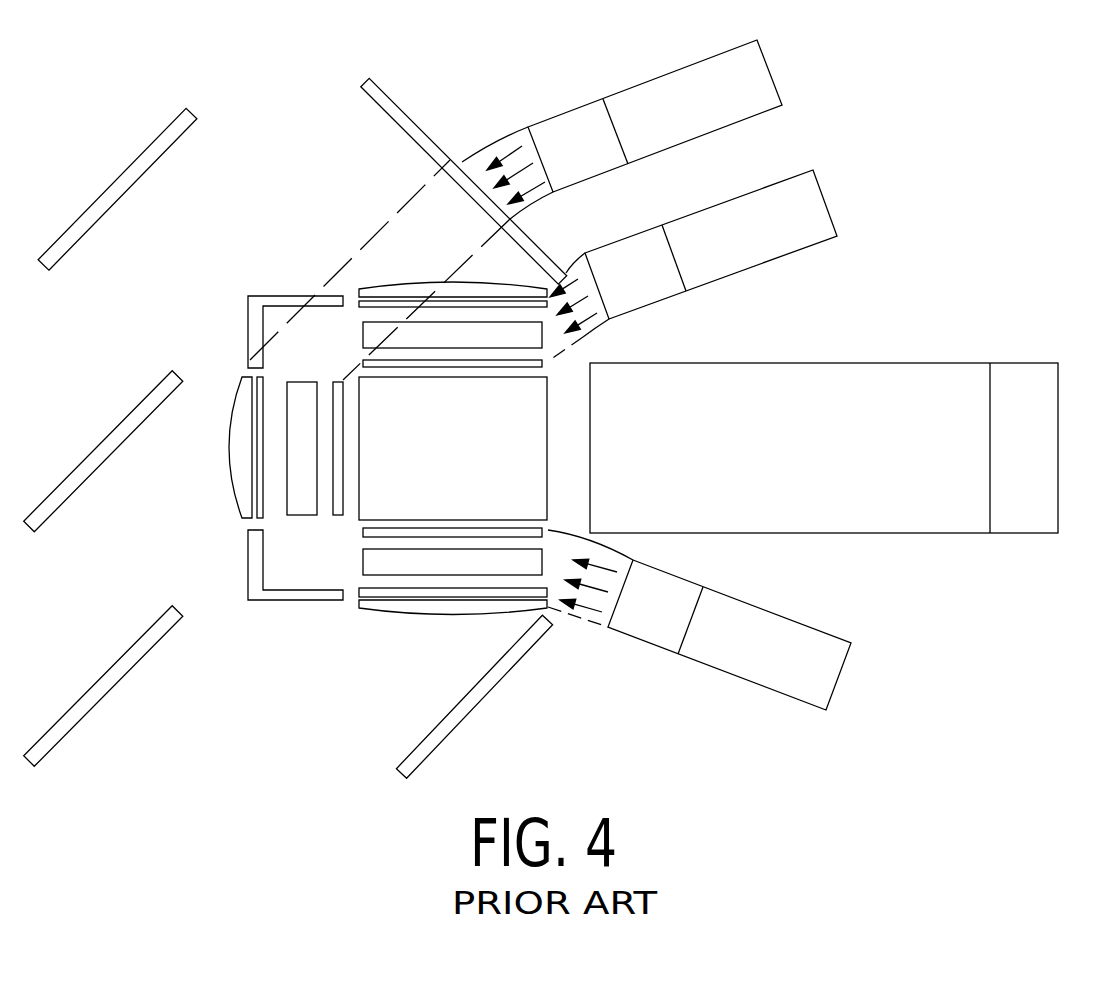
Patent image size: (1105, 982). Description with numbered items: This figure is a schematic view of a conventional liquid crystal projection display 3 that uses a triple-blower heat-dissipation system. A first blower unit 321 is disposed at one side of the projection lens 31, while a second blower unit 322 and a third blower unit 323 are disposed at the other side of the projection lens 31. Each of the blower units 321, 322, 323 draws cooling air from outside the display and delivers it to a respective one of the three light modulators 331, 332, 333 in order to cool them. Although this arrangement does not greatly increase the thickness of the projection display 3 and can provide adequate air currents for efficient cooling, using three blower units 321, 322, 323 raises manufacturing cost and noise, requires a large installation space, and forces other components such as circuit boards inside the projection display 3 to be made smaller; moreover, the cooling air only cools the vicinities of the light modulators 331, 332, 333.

The liquid crystal projection display 3 is at (852, 116).
The projection lens 31 is at (857, 393).
The first blower unit 321 is at (827, 650).
The second blower unit 322 is at (747, 70).
The third blower unit 323 is at (808, 222).
The light modulator 331 is at (350, 563).
The light modulator 332 is at (290, 530).
The light modulator 333 is at (347, 317).